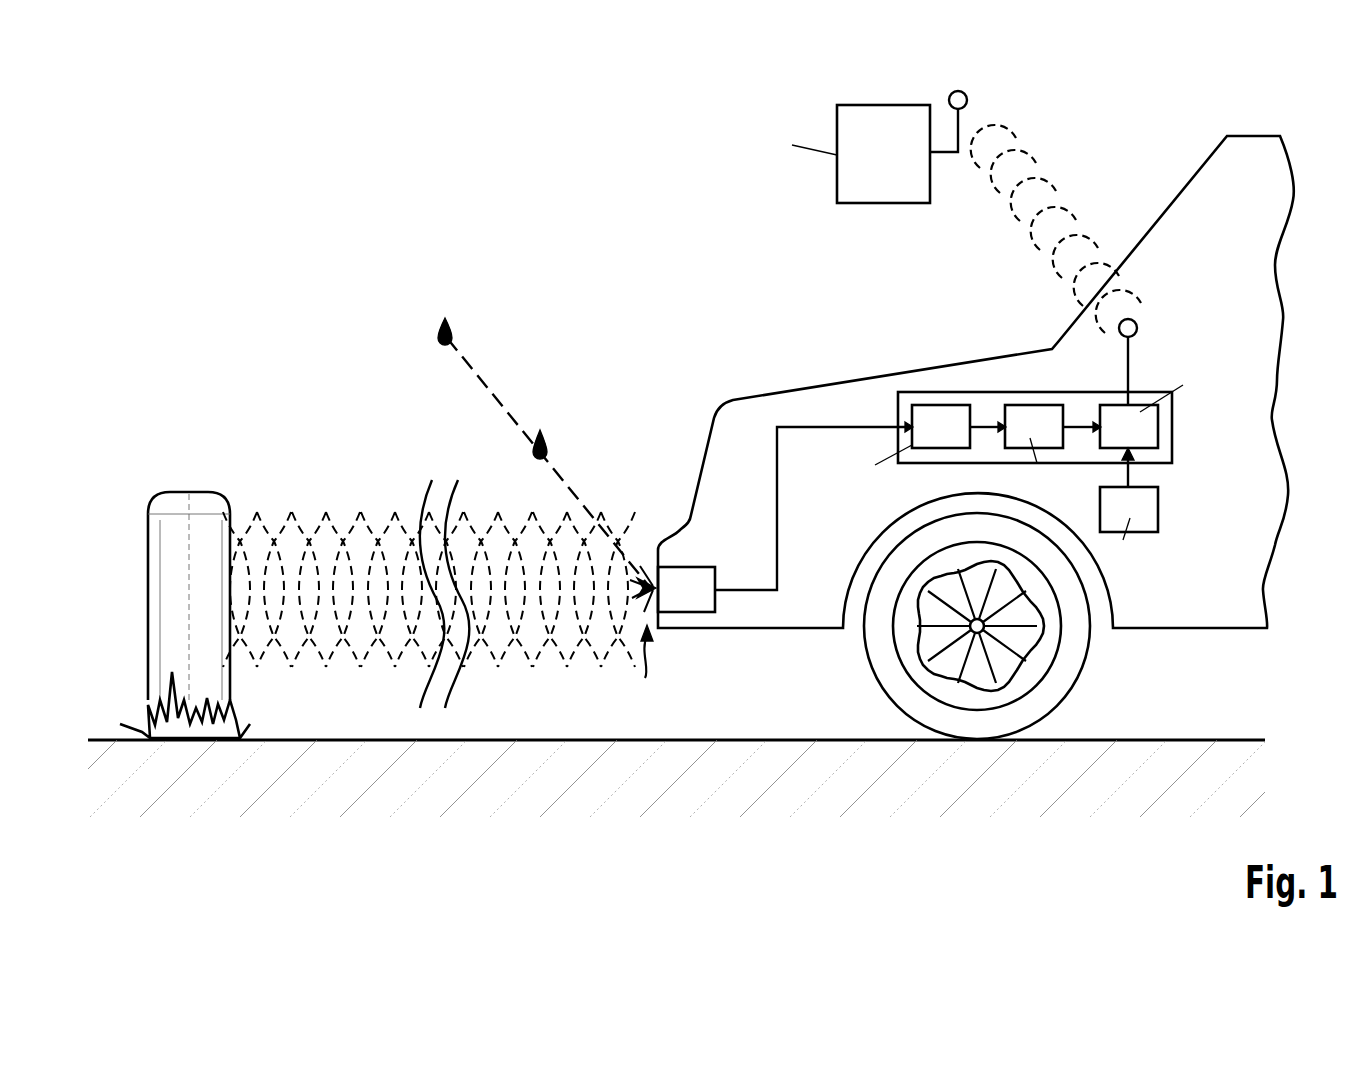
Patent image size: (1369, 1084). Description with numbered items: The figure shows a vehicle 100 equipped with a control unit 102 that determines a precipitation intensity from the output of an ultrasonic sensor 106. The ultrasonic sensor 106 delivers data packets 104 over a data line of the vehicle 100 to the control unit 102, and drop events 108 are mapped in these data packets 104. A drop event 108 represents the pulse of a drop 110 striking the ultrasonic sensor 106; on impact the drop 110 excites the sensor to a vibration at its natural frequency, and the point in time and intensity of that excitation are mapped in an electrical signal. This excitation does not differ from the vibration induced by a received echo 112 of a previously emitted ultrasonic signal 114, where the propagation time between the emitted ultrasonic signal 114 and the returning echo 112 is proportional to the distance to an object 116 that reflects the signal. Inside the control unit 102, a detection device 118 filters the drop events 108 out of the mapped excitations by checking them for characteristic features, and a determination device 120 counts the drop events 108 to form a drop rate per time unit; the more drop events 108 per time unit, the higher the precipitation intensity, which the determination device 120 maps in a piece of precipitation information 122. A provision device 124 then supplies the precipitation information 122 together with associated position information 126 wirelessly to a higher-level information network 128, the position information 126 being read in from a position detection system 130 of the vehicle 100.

The vehicle 100 is at (757, 397).
The control unit 102 is at (940, 392).
The data packets 104 is at (838, 427).
The ultrasonic sensor 106 is at (707, 605).
The drop event 108 is at (985, 427).
The drop 110 is at (452, 338).
The echo 112 is at (573, 660).
The ultrasonic signal 114 is at (388, 518).
The object 116 is at (148, 613).
The detection device 118 is at (962, 442).
The determination device 120 is at (1055, 442).
The precipitation information 122 is at (1077, 427).
The provision device 124 is at (1150, 442).
The position information 126 is at (1130, 478).
The information network 128 is at (905, 170).
The position detection system 130 is at (1148, 524).